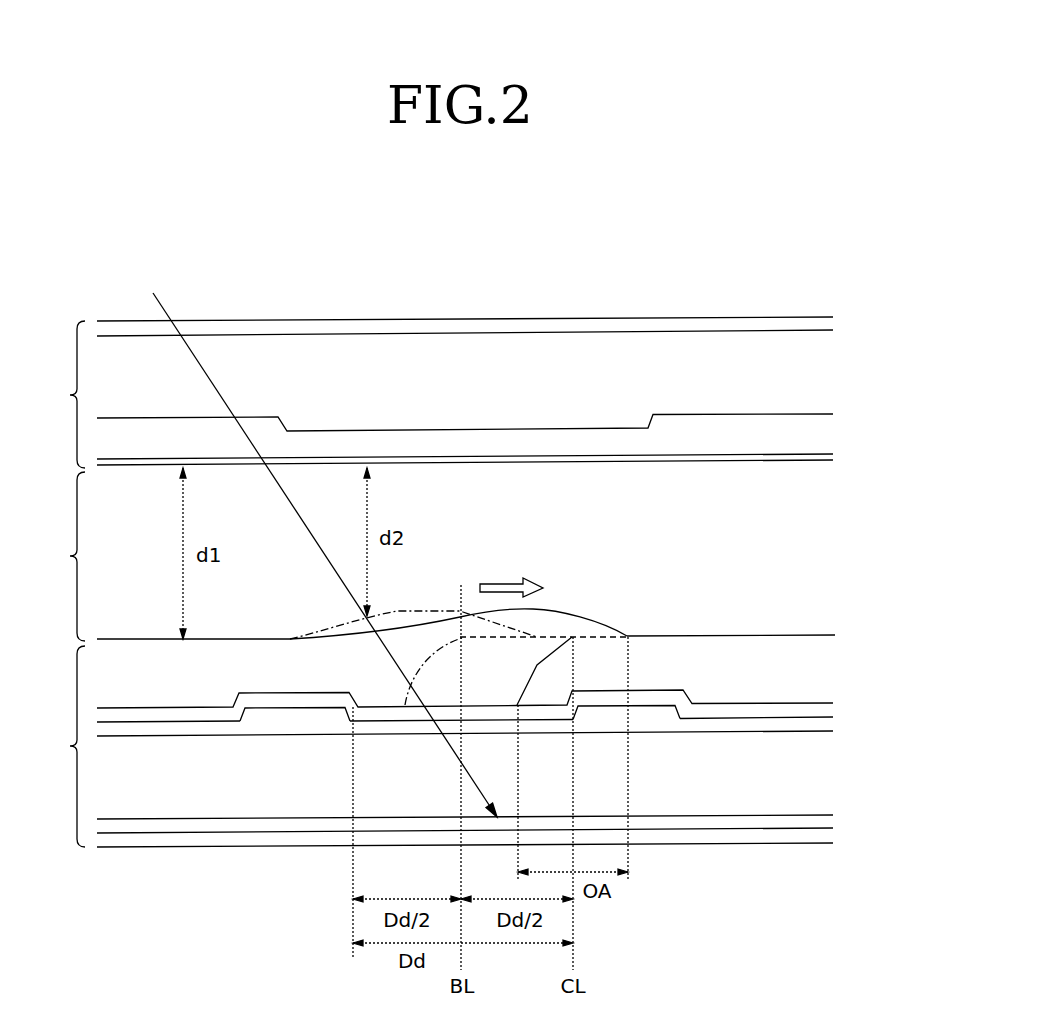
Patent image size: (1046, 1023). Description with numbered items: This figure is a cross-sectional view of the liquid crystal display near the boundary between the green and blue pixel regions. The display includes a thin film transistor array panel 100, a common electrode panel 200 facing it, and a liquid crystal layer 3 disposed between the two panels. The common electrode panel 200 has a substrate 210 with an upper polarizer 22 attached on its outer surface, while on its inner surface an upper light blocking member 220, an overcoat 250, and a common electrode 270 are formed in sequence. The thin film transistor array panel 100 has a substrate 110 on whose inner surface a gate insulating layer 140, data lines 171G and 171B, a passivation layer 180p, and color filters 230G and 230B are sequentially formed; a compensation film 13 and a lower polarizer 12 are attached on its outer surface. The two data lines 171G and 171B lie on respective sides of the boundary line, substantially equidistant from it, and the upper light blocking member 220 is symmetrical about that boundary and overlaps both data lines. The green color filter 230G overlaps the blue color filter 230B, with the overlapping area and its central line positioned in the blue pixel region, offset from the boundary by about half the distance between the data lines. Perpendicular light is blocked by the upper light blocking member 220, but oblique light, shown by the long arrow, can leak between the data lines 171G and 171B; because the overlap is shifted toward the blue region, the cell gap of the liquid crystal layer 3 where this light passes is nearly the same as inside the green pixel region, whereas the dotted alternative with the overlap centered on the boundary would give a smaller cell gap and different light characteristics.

The common electrode panel 200 is at (56, 394).
The liquid crystal layer 3 is at (69, 556).
The thin film transistor array panel 100 is at (56, 746).
The upper polarizer 22 is at (784, 322).
The substrate 210 is at (262, 345).
The upper light blocking member 220 is at (340, 428).
The overcoat 250 is at (700, 432).
The common electrode 270 is at (740, 455).
The green color filter 230G is at (128, 660).
The blue color filter 230B is at (740, 655).
The passivation layer 180p is at (768, 710).
The data line 171G is at (290, 713).
The data line 171B is at (657, 712).
The gate insulating layer 140 is at (203, 728).
The substrate 110 is at (147, 800).
The compensation film 13 is at (825, 820).
The lower polarizer 12 is at (825, 835).